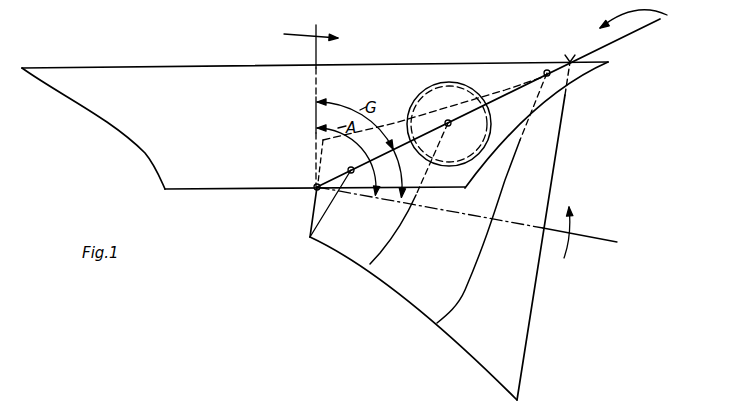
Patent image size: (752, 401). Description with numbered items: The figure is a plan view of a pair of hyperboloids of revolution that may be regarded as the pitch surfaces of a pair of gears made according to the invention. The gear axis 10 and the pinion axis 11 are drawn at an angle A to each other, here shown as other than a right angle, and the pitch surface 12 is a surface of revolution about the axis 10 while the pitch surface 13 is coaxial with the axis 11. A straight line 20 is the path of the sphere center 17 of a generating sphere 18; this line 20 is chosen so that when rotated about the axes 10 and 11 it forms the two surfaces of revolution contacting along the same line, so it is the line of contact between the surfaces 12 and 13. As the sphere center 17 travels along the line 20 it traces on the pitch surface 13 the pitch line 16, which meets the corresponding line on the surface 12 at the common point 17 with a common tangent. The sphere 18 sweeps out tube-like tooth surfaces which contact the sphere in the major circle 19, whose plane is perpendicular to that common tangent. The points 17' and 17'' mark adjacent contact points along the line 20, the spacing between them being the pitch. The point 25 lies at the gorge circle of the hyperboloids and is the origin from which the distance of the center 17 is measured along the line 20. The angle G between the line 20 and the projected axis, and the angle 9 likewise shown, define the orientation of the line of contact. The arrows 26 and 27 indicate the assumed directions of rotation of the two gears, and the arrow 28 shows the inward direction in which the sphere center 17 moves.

The angle of rotation 9 is at (402, 162).
The gear axis 10 is at (315, 53).
The pinion axis 11 is at (606, 236).
The pitch surface 12 is at (87, 108).
The pitch surface 13 is at (438, 323).
The pitch line 16 is at (468, 280).
The sphere center 17 is at (410, 179).
The adjacent contact point 17' is at (332, 195).
The adjacent contact point 17'' is at (447, 108).
The generating sphere 18 is at (468, 85).
The major circle 19 is at (450, 86).
The line of contact 20 is at (498, 100).
The gorge circle point 25 is at (313, 190).
The rotation arrow 26 is at (298, 36).
The rotation arrow 27 is at (572, 222).
The sphere center movement arrow 28 is at (645, 21).